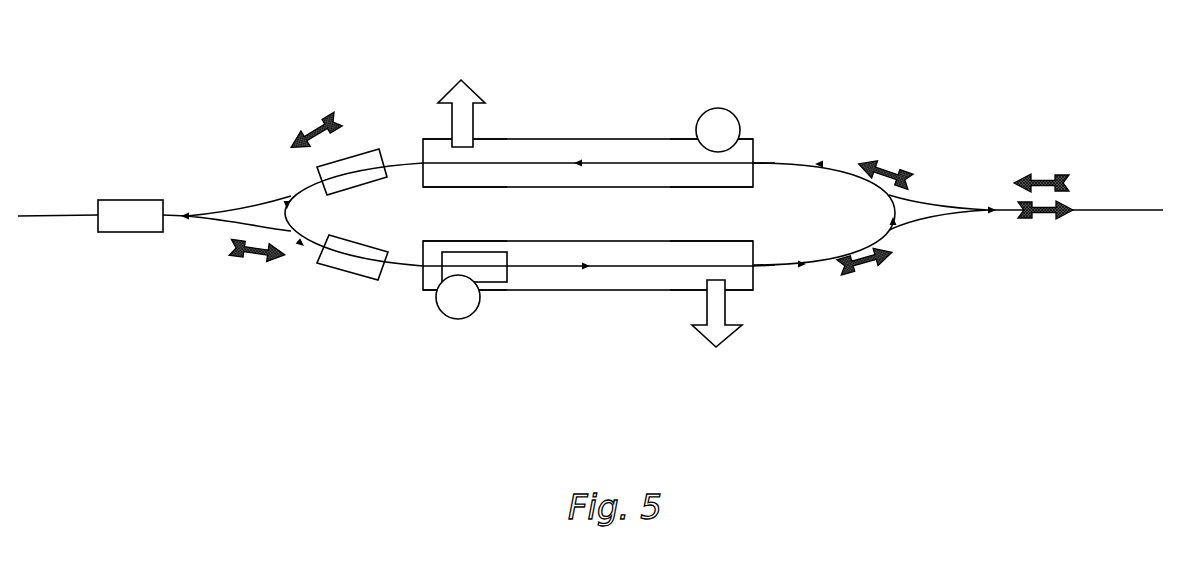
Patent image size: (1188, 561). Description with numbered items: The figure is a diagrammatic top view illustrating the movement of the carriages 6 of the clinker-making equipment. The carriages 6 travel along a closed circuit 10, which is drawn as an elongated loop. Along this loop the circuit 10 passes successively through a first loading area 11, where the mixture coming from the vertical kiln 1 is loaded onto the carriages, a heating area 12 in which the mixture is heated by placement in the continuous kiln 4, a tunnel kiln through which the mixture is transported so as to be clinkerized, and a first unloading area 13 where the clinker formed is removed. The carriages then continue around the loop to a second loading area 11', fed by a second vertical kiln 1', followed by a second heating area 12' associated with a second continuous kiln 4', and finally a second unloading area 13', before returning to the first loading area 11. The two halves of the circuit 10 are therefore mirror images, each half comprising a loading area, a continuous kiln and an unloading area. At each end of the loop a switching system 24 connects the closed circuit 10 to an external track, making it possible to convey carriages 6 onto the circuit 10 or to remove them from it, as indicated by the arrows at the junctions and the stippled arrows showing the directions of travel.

The vertical kiln 1 is at (718, 112).
The vertical kiln 1' is at (471, 304).
The continuous kiln 4 is at (512, 110).
The second continuous kiln 4' is at (651, 318).
The carriage 6 is at (125, 205).
The closed circuit 10 is at (785, 268).
The loading area 11 is at (711, 94).
The second loading area 11' is at (465, 338).
The heating area 12 is at (599, 94).
The second heating area 12' is at (599, 338).
The unloading area 13 is at (465, 94).
The second unloading area 13' is at (711, 338).
The switching system 24 is at (243, 188).